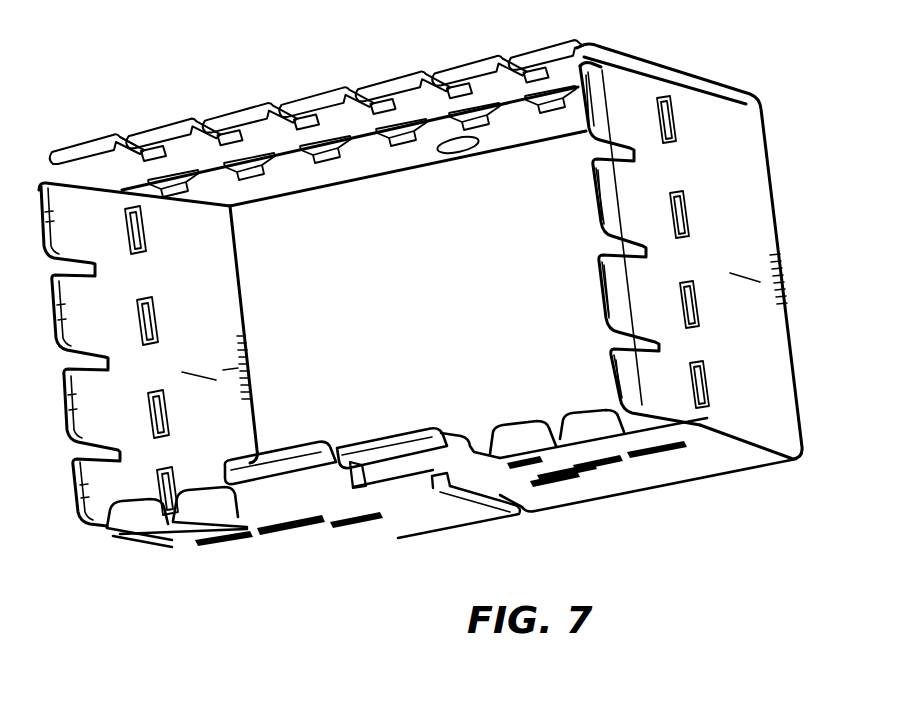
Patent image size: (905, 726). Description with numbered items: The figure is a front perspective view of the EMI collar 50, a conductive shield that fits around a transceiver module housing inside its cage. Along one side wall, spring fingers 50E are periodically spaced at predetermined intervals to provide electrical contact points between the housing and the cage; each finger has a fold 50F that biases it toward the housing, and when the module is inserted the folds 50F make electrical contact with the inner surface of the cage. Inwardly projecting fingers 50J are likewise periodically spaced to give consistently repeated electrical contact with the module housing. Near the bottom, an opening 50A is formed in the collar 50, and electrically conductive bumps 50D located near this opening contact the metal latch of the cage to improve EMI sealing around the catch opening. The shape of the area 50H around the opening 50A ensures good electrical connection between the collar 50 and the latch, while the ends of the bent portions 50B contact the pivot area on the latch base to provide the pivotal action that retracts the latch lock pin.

The EMI collar 50 is at (172, 85).
The inwardly projecting fingers 50J is at (195, 181).
The spring fingers 50E is at (642, 189).
The folds 50F is at (624, 293).
The electrically conductive bumps 50D is at (558, 486).
The bent portions 50B is at (260, 480).
The area around the opening 50H is at (321, 500).
The opening 50A is at (423, 472).